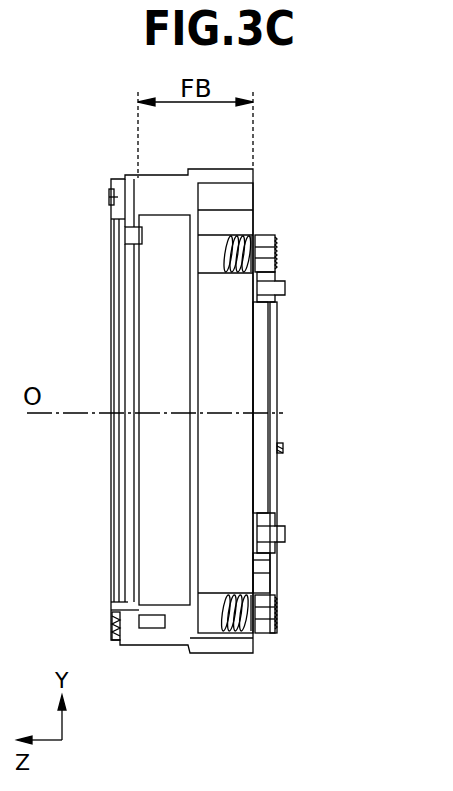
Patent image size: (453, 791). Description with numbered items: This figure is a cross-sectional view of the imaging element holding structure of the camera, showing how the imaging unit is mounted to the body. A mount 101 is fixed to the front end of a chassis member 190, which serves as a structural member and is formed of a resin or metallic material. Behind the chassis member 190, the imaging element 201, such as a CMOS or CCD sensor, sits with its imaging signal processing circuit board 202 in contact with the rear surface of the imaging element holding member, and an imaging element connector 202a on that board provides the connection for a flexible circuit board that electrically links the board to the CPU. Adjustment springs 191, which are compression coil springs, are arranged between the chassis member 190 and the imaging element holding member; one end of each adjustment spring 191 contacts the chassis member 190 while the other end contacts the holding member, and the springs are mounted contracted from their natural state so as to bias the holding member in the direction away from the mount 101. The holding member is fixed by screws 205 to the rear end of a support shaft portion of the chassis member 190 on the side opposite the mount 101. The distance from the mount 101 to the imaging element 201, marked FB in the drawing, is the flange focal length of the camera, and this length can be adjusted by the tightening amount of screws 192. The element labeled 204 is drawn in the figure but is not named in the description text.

The mount 101 is at (118, 198).
The chassis member 190 is at (160, 197).
The adjustment spring 191 is at (218, 234).
The screw 192 is at (277, 257).
The imaging element 201 is at (258, 332).
The imaging signal processing circuit board 202 is at (275, 380).
The imaging element connector 202a is at (280, 452).
The spring 204 is at (275, 237).
The screw 205 is at (283, 280).